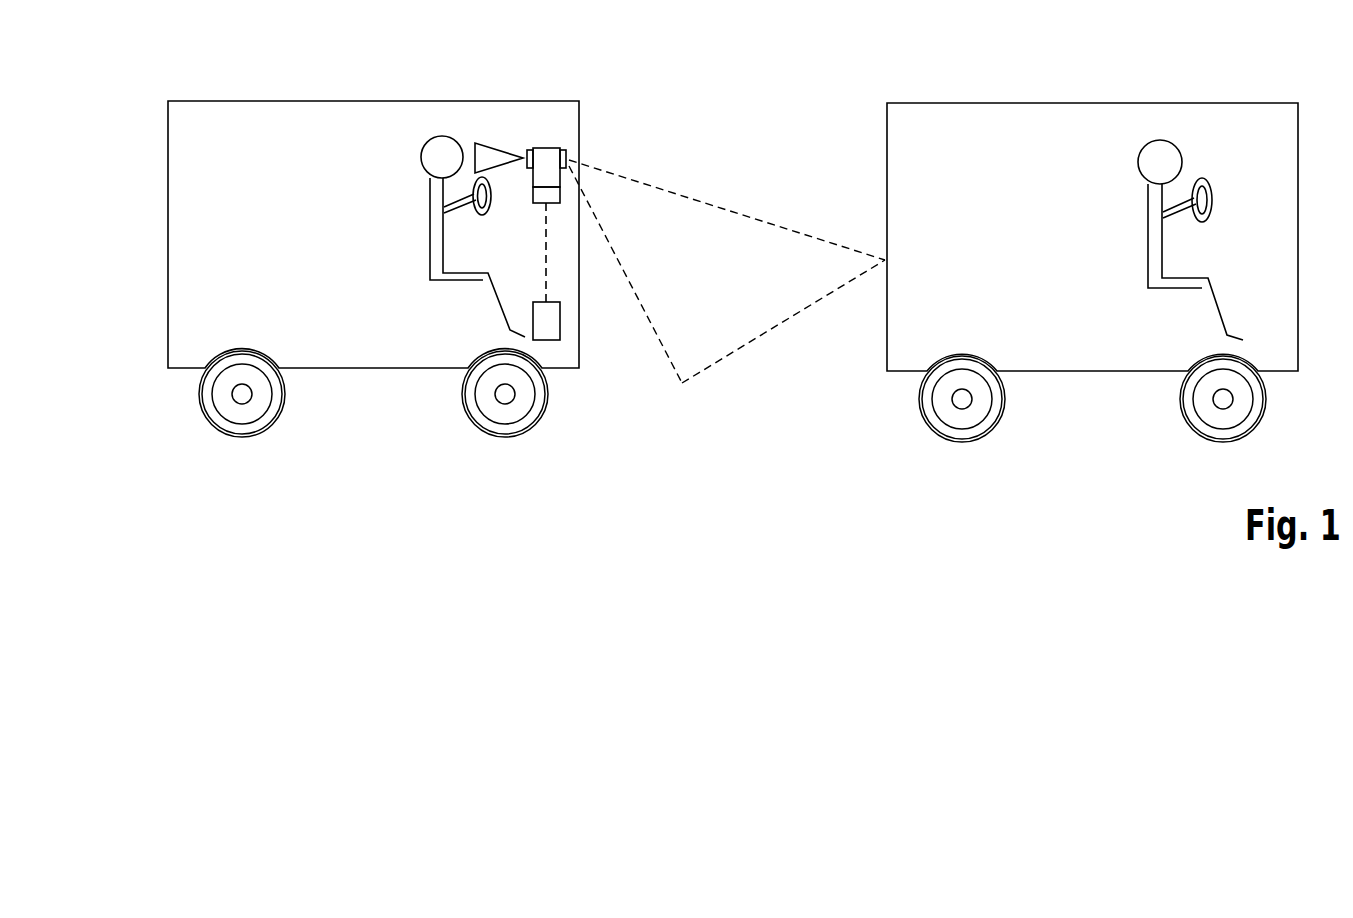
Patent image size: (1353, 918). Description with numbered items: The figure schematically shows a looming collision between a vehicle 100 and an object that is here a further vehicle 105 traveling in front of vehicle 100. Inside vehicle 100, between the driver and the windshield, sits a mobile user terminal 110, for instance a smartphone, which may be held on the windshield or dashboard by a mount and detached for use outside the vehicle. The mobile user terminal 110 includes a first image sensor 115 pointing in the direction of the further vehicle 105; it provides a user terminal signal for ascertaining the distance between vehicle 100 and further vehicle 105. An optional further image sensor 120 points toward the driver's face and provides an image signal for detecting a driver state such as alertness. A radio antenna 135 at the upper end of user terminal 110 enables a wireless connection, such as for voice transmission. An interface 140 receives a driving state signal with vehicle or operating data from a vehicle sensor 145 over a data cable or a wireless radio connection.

The vehicle 100 is at (373, 101).
The further vehicle 105 is at (1093, 103).
The mobile user terminal 110 is at (567, 133).
The first image sensor 115 is at (567, 158).
The further image sensor 120 is at (527, 153).
The radio antenna 135 is at (543, 148).
The interface 140 is at (532, 194).
The vehicle sensor 145 is at (580, 391).